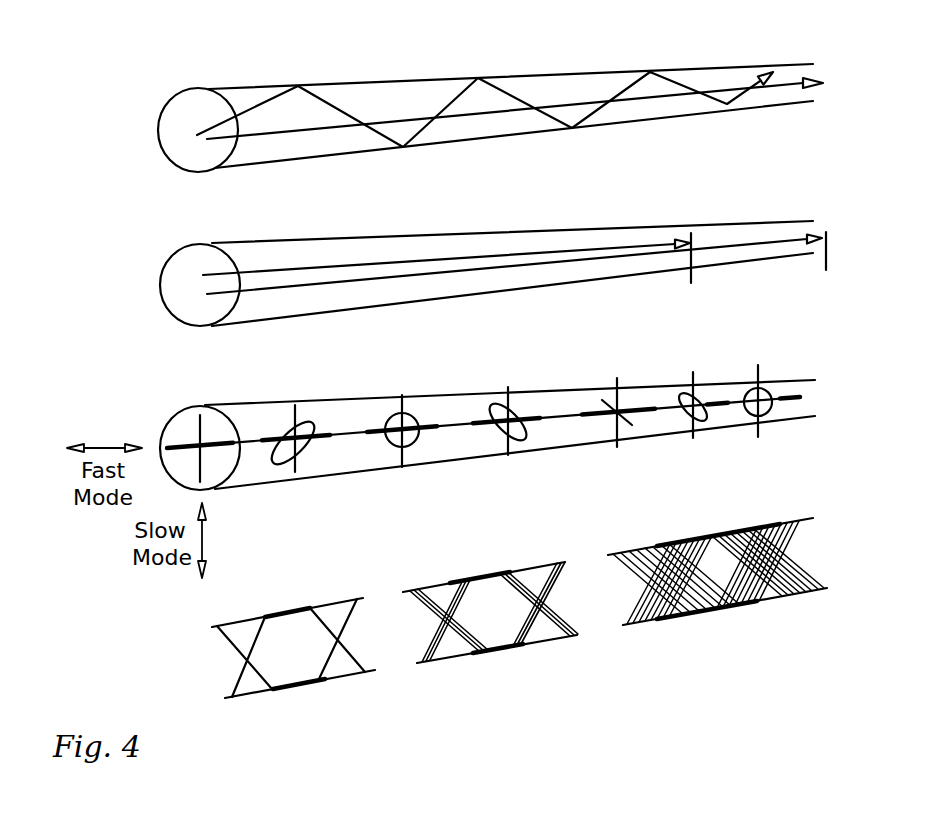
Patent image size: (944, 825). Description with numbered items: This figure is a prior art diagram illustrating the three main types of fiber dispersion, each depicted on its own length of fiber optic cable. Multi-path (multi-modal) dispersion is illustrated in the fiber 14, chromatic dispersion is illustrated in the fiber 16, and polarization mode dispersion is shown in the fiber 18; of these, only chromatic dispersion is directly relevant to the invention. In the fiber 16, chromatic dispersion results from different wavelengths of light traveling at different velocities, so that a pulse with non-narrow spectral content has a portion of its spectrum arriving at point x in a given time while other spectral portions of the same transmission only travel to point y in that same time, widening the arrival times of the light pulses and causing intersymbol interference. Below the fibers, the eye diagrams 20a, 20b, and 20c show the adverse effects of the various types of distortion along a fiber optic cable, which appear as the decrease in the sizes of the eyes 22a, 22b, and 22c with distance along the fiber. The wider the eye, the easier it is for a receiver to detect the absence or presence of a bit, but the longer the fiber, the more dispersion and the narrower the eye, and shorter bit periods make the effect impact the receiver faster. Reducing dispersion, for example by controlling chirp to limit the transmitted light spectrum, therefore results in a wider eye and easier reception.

The fiber 14 is at (169, 159).
The fiber 16 is at (168, 269).
The fiber 18 is at (172, 422).
The eye diagram 20a is at (295, 690).
The eye diagram 20b is at (500, 648).
The eye diagram 20c is at (715, 608).
The eye 22a is at (297, 628).
The eye 22b is at (482, 588).
The eye 22c is at (707, 566).